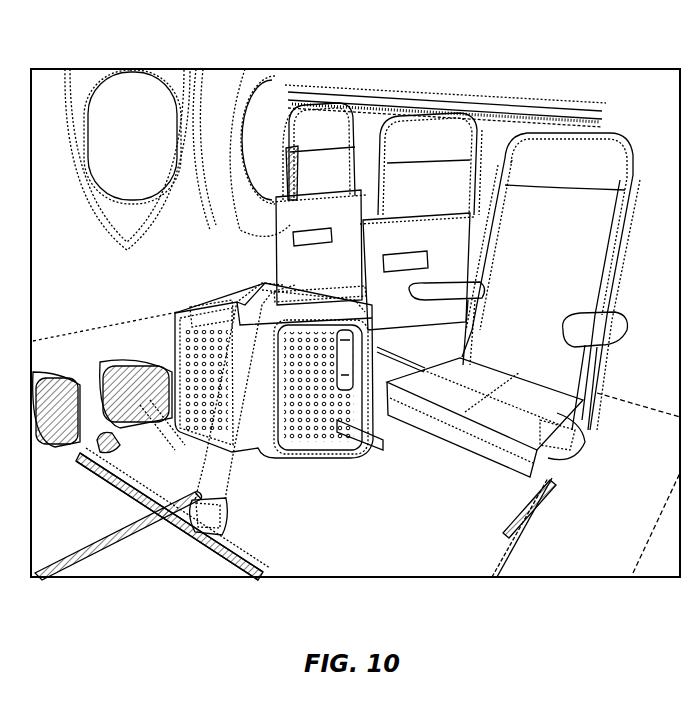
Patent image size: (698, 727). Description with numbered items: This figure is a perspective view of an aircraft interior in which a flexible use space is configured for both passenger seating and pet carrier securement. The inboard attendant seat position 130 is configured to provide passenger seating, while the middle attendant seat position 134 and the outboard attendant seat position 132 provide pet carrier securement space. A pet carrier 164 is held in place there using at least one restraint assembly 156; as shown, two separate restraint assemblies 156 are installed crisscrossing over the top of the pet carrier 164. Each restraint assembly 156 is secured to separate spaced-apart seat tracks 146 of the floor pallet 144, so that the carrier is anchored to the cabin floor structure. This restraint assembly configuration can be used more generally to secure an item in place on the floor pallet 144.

The inboard attendant seat position 130 is at (581, 148).
The outboard attendant seat position 132 is at (343, 127).
The middle attendant seat position 134 is at (431, 128).
The floor pallet 144 is at (442, 535).
The seat tracks 146 is at (228, 553).
The restraint assembly 156 is at (143, 410).
The pet carrier 164 is at (285, 428).